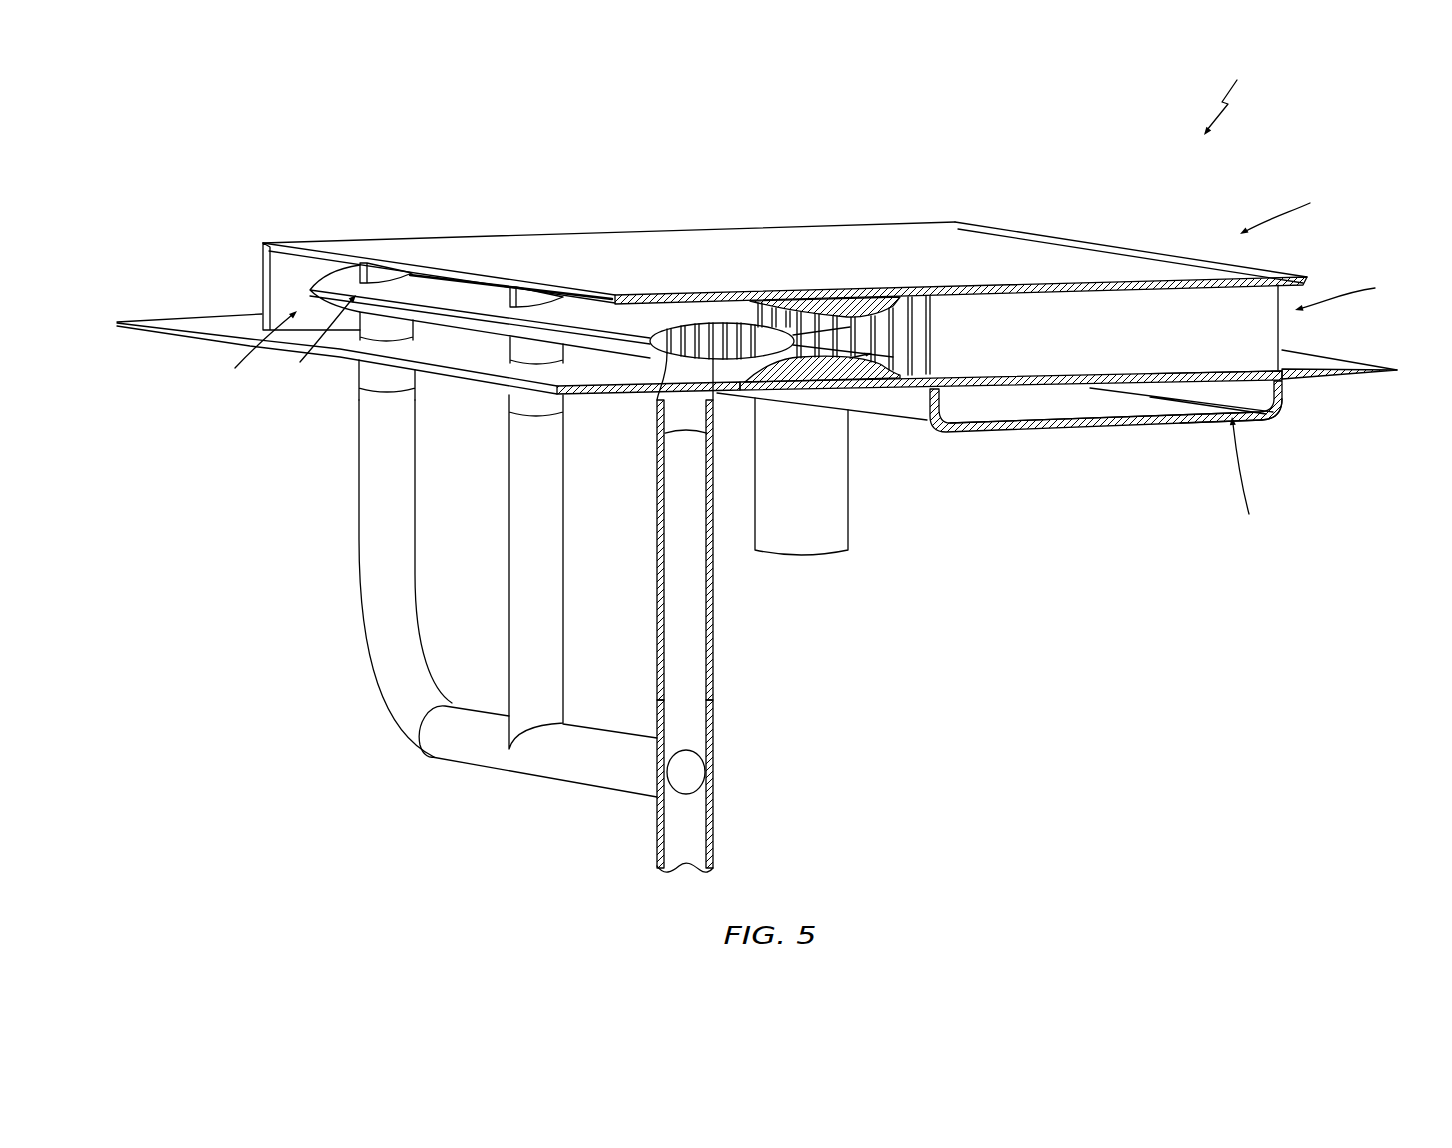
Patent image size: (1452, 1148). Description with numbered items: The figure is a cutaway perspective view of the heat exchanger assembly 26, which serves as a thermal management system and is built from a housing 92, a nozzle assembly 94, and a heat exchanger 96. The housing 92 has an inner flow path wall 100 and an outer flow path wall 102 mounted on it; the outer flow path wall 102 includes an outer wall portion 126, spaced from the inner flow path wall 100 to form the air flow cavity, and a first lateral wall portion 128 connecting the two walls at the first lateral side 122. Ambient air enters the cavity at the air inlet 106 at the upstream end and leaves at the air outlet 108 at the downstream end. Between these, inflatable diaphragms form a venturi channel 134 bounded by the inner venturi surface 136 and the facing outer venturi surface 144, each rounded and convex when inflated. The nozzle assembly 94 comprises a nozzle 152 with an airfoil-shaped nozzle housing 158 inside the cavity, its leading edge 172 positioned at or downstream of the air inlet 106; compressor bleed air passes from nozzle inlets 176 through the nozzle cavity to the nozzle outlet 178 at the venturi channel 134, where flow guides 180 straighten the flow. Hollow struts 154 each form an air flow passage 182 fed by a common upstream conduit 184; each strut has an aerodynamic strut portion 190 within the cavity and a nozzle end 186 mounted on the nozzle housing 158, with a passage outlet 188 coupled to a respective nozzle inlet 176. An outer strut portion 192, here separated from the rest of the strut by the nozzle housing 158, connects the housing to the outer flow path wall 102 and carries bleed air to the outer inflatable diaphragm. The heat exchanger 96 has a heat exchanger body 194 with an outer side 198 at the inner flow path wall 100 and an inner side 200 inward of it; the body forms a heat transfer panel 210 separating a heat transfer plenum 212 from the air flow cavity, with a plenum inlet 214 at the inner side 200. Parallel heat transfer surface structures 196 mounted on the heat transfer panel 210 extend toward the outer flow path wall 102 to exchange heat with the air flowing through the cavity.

The heat exchanger assembly 26 is at (1231, 93).
The housing 92 is at (1289, 208).
The nozzle assembly 94 is at (457, 327).
The heat exchanger 96 is at (1106, 461).
The inner flow path wall 100 is at (1337, 357).
The outer flow path wall 102 is at (997, 250).
The air inlet 106 is at (337, 352).
The air outlet 108 is at (1354, 292).
The first lateral side 122 is at (577, 233).
The outer wall portion 126 is at (790, 245).
The first lateral wall portion 128 is at (263, 277).
The venturi channel 134 is at (885, 383).
The inner venturi surface 136 is at (763, 392).
The outer venturi surface 144 is at (903, 317).
The nozzle 152 is at (718, 322).
The strut 154 is at (358, 540).
The nozzle housing 158 is at (455, 297).
The leading edge 172 is at (590, 340).
The nozzle inlet 176 is at (657, 403).
The nozzle outlet 178 is at (823, 302).
The flow guide 180 is at (745, 317).
The air flow passage 182 is at (683, 608).
The upstream conduit 184 is at (657, 828).
The nozzle end 186 is at (508, 355).
The passage outlet 188 is at (720, 402).
The aerodynamic strut portion 190 is at (377, 327).
The outer strut portion 192 is at (345, 262).
The heat exchanger body 194 is at (1115, 432).
The heat transfer surface structures 196 is at (1145, 317).
The outer side 198 is at (1170, 428).
The inner side 200 is at (1236, 367).
The heat transfer panel 210 is at (1040, 380).
The heat transfer plenum 212 is at (1028, 405).
The plenum inlet 214 is at (848, 500).